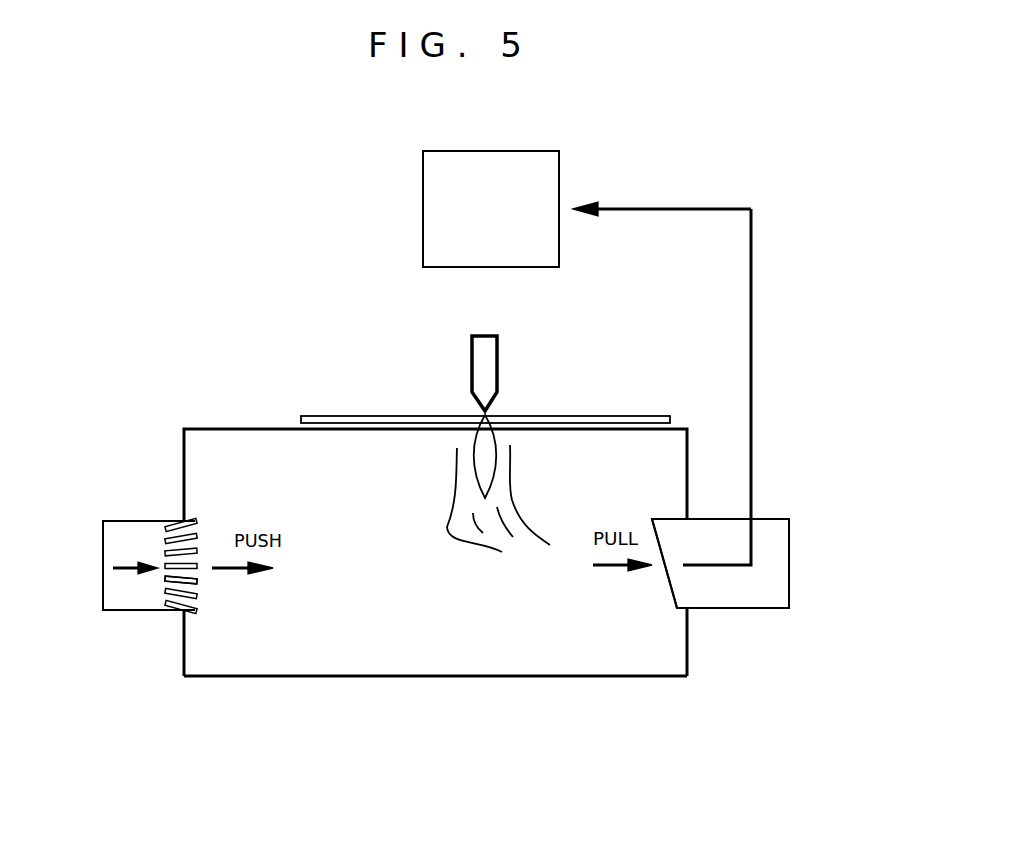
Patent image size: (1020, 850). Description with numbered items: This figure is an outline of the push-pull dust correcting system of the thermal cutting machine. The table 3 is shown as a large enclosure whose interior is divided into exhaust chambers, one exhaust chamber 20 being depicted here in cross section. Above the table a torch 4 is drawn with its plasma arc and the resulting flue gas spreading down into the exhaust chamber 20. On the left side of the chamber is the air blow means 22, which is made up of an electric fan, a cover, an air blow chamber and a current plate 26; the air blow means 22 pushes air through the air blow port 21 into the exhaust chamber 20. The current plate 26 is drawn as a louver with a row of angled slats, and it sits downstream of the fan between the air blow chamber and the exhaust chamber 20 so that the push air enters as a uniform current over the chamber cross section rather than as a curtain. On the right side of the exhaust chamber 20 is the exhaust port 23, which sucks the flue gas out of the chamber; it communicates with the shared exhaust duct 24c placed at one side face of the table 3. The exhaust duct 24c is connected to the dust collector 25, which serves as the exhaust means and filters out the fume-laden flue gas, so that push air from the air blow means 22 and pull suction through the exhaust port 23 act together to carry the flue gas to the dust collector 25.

The table 3 is at (362, 678).
The nozzle 4 is at (497, 352).
The exhaust chamber 20 is at (242, 448).
The air blow port 21 is at (198, 577).
The air blow means 22 is at (103, 553).
The exhaust port 23 is at (668, 590).
The exhaust duct 24c is at (789, 561).
The dust collector 25 is at (423, 232).
The current plate 26 is at (167, 577).